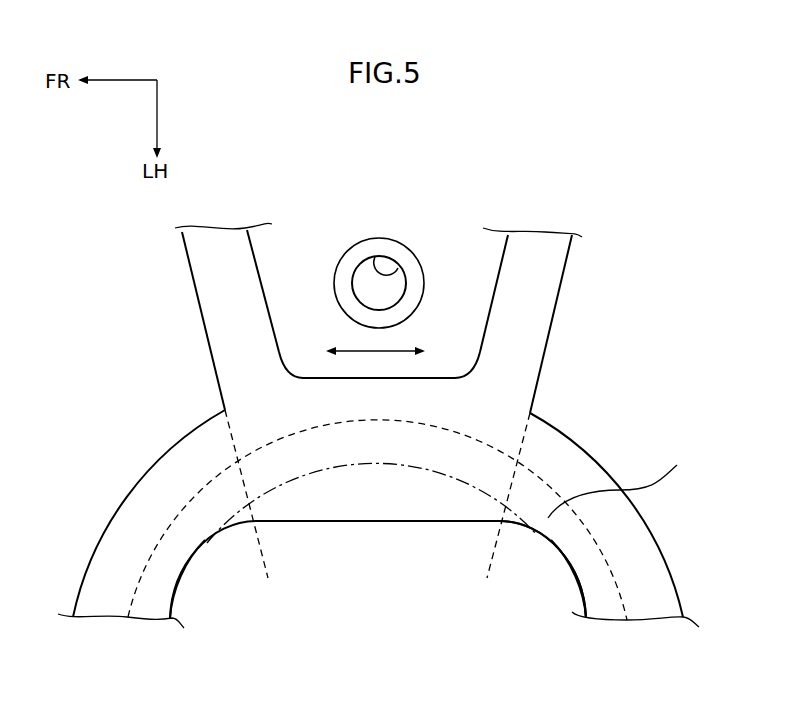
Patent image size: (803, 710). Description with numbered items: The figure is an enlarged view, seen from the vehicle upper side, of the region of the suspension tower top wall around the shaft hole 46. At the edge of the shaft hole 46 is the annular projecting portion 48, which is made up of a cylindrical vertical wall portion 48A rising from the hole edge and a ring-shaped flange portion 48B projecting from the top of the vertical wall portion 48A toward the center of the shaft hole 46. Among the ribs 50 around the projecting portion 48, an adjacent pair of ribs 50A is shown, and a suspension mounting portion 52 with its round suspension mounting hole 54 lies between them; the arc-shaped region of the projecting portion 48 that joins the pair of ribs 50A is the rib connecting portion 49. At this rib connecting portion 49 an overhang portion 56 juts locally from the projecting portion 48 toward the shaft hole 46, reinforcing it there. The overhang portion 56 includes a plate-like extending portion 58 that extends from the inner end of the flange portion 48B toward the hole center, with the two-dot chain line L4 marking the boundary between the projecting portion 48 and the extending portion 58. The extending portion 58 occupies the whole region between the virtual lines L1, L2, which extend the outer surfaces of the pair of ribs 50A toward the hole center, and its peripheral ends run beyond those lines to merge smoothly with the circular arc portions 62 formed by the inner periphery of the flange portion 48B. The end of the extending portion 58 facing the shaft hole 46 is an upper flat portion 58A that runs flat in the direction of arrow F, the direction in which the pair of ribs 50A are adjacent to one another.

The shaft hole 46 is at (378, 539).
The projecting portion 48 is at (160, 452).
The vertical wall portion 48A is at (565, 470).
The flange portion 48B is at (623, 482).
The rib connecting portion 49 is at (327, 388).
The rib 50 is at (372, 282).
The pair of ribs 50A is at (197, 296).
The suspension mounting portion 52 is at (310, 268).
The suspension mounting hole 54 is at (398, 268).
The overhang portion 56 is at (377, 531).
The extending portion 58 is at (333, 503).
The upper flat portion 58A is at (435, 522).
The circular arc portion 62 is at (183, 580).
The virtual line L1 is at (262, 557).
The virtual line L2 is at (495, 547).
The two-dot chain line L4 is at (432, 472).
The arrow F is at (393, 350).